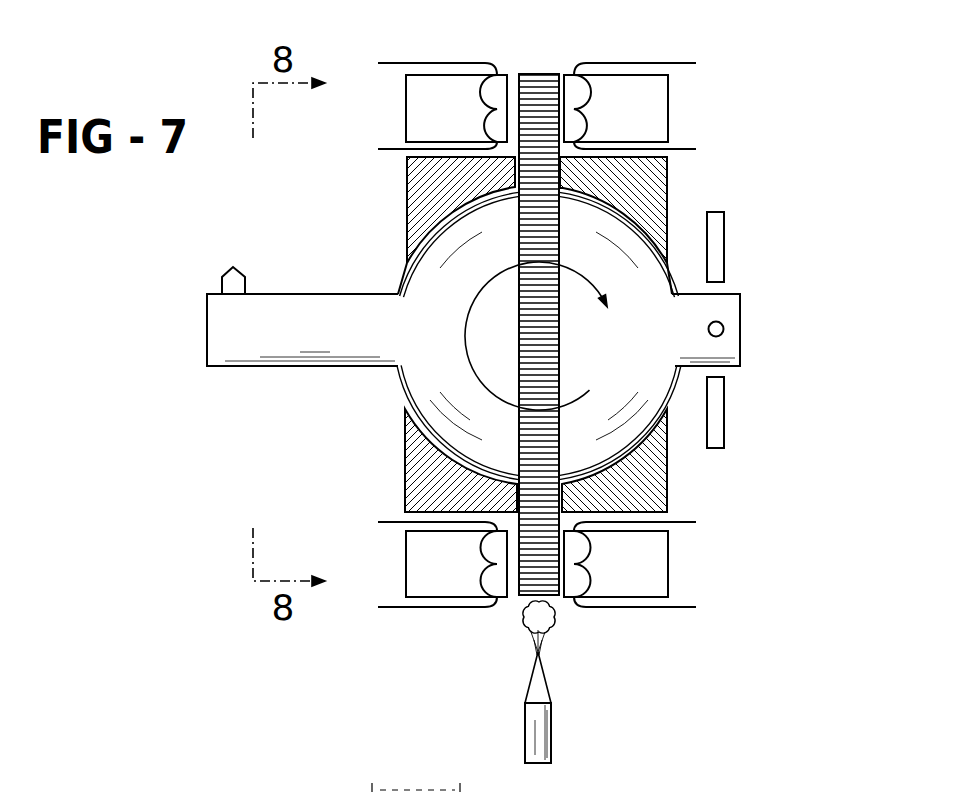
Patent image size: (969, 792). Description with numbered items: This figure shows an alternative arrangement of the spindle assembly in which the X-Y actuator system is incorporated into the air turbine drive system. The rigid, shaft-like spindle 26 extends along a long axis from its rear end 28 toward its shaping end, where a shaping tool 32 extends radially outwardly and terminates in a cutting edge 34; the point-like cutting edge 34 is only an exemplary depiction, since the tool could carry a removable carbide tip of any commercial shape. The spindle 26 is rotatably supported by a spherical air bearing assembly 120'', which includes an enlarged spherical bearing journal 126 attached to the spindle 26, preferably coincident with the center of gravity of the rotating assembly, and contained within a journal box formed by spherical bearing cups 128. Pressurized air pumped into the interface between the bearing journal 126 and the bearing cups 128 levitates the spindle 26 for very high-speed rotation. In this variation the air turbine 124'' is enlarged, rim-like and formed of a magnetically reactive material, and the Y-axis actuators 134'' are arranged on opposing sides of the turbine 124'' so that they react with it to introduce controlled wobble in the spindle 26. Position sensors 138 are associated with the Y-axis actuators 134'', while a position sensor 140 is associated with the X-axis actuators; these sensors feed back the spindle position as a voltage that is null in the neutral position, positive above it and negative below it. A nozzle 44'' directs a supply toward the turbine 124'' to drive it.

The air turbine 124'' is at (554, 300).
The Y-axis actuators 134'' is at (546, 335).
The spherical air bearing assembly 120'' is at (462, 334).
The spherical bearing journal 126 is at (400, 372).
The spherical bearing cups 128 is at (468, 212).
The spindle 26 is at (294, 375).
The cutting edge 34 is at (233, 266).
The shaping tool 32 is at (249, 284).
The rear end 28 is at (742, 338).
The position sensor 140 is at (724, 329).
The position sensors 138 is at (726, 255).
The nozzle 44'' is at (590, 682).